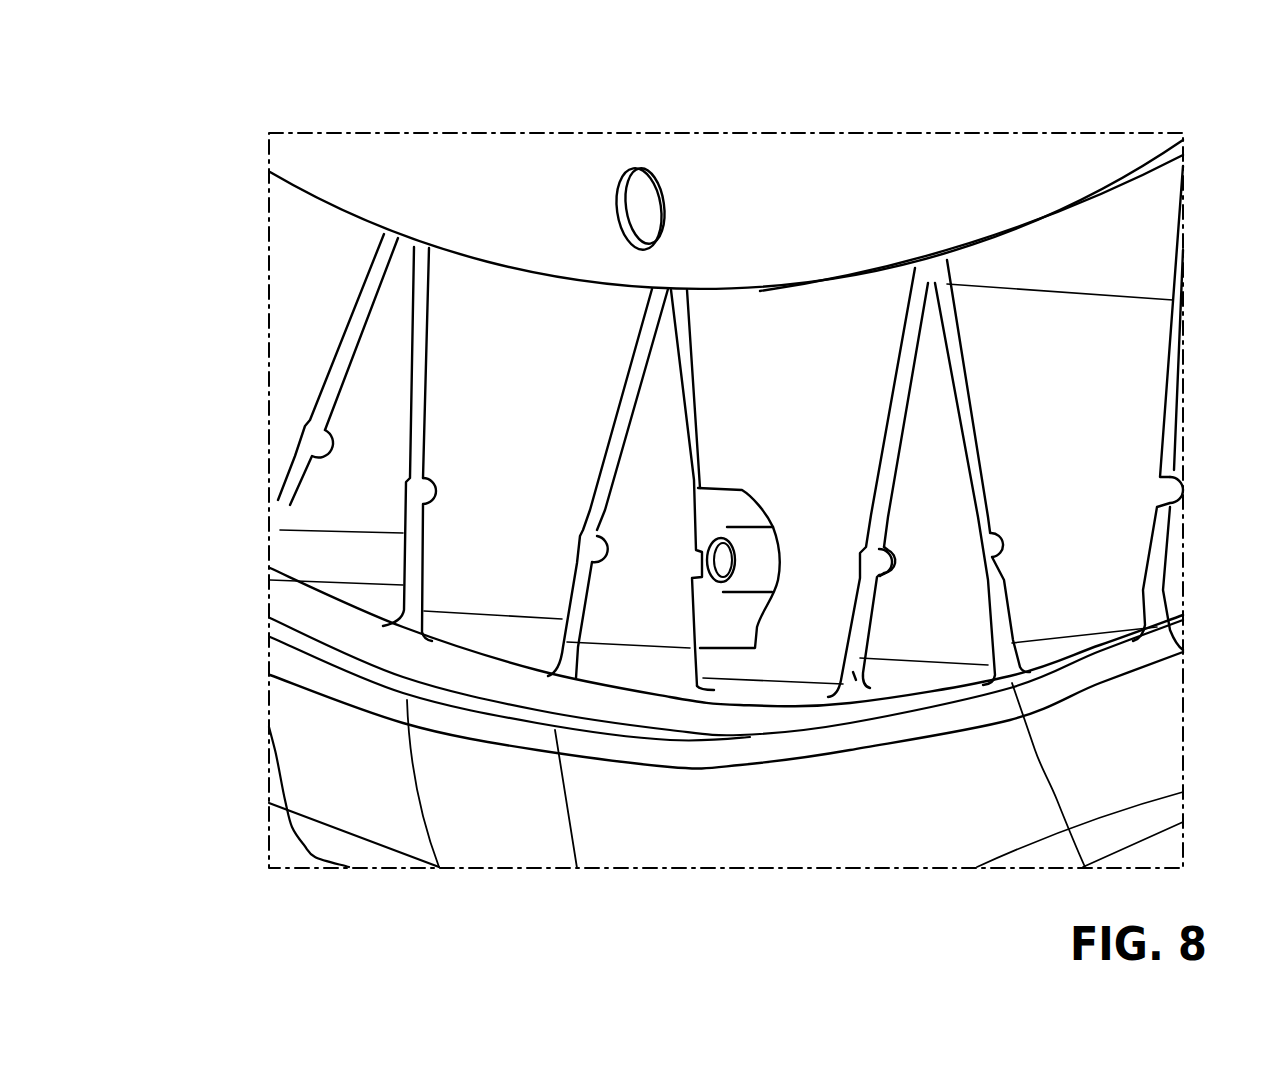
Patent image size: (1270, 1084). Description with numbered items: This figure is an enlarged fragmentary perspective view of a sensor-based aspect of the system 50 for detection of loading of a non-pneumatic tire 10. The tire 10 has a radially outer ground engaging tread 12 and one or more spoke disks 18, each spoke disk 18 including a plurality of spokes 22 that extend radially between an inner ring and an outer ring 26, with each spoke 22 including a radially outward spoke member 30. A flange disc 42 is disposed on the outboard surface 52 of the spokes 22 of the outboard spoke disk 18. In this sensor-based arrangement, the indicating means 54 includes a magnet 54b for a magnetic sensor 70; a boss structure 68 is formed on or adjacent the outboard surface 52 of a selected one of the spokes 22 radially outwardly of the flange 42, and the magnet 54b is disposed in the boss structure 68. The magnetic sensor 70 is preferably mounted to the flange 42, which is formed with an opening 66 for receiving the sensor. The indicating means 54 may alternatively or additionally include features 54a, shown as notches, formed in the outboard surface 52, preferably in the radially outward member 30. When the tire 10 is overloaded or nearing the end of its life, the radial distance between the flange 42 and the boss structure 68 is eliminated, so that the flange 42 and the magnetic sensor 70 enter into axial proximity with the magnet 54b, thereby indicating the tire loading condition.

The non-pneumatic tire 10 is at (290, 846).
The radially outer ground engaging tread 12 is at (316, 852).
The spoke disk 18 is at (333, 341).
The spoke 22 is at (410, 427).
The outer ring 26 is at (512, 698).
The radially outward spoke member 30 is at (973, 462).
The flange disc 42 is at (350, 188).
The system for detection of non-pneumatic tire loading 50 is at (243, 613).
The outboard surface 52 is at (697, 686).
The indicating means 54 is at (729, 523).
The features 54a is at (882, 575).
The magnet 54b is at (733, 566).
The opening 66 is at (618, 212).
The boss structure 68 is at (723, 592).
The magnetic sensor 70 is at (642, 200).